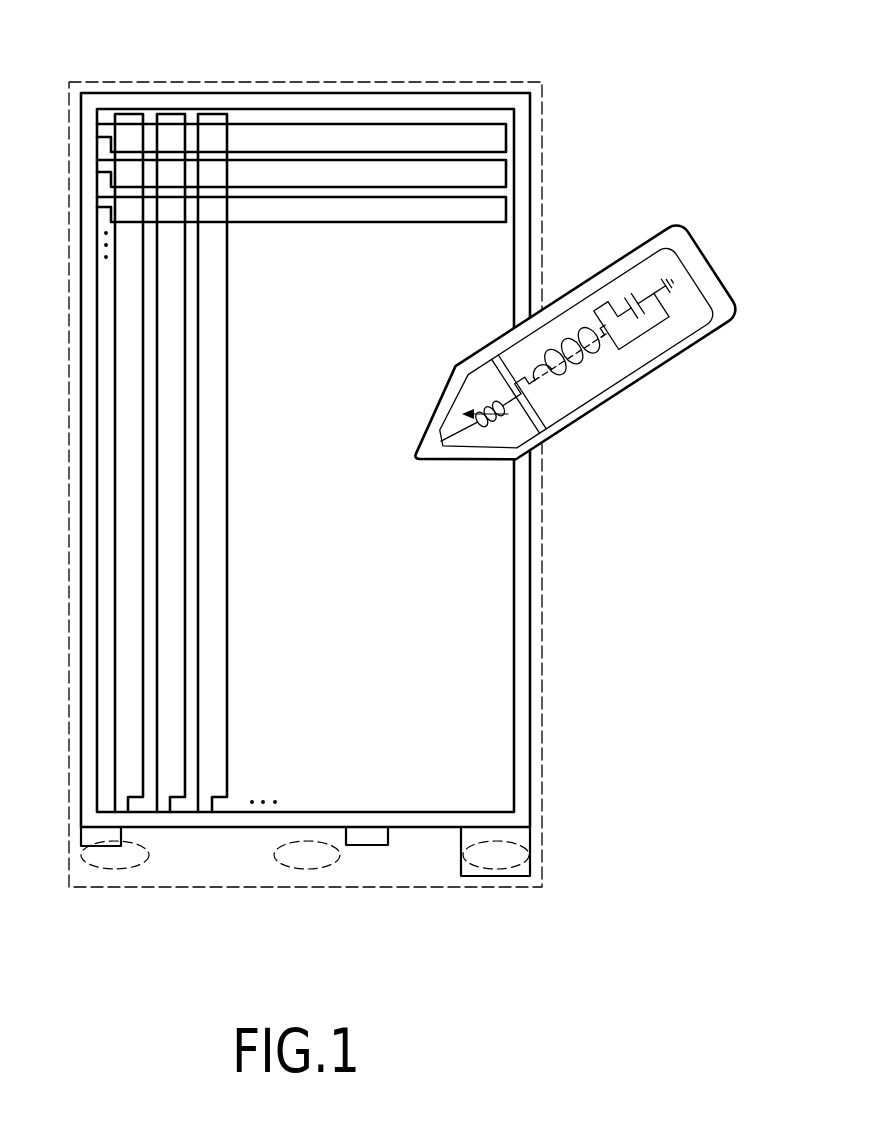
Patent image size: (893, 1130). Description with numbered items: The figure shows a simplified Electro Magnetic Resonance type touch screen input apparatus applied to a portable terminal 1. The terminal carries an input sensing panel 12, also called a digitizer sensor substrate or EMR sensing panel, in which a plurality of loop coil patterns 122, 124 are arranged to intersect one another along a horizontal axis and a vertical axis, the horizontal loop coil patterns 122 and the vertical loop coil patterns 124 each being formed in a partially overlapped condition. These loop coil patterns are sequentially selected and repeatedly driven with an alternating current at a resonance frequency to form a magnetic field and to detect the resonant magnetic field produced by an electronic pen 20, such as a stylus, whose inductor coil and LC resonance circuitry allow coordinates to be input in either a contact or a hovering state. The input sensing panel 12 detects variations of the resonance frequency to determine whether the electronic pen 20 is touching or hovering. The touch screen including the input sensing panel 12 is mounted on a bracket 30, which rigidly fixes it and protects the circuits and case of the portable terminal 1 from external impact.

The portable terminal 1 is at (305, 82).
The input sensing panel 12 is at (495, 735).
The electronic pen 20 is at (577, 358).
The bracket 30 is at (523, 630).
The loop coil patterns 122 is at (506, 217).
The loop coil patterns 124 is at (213, 114).